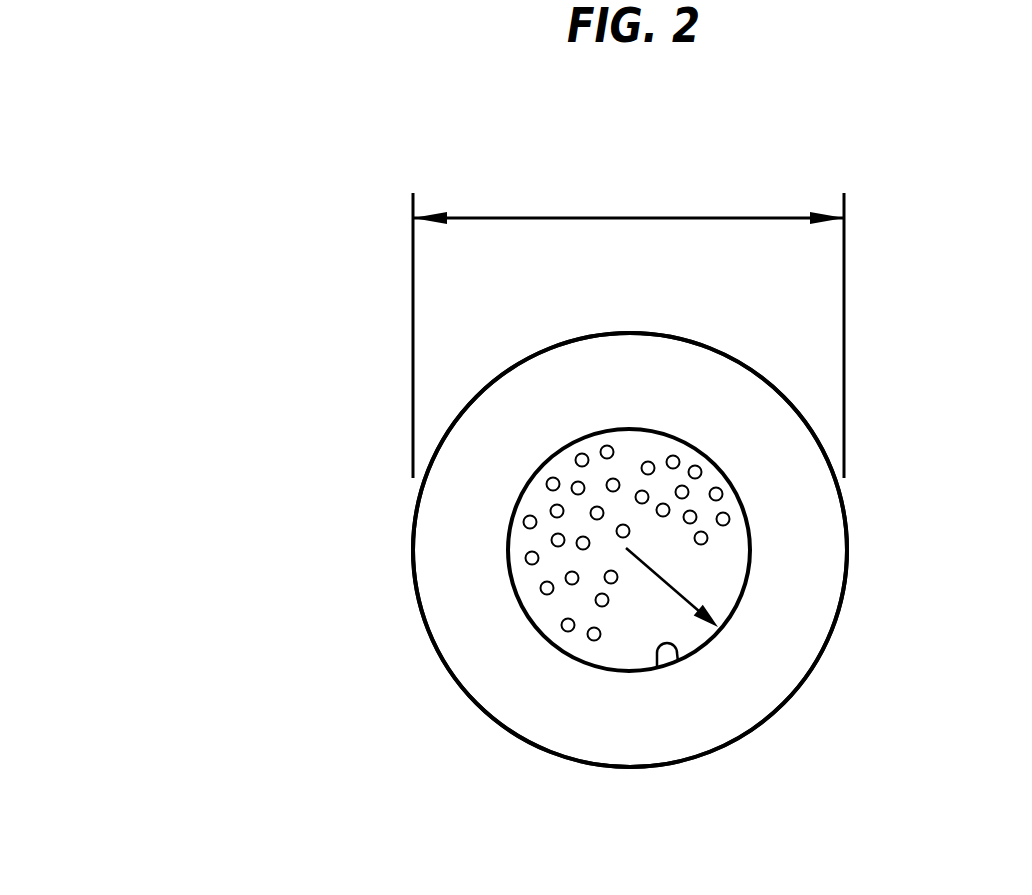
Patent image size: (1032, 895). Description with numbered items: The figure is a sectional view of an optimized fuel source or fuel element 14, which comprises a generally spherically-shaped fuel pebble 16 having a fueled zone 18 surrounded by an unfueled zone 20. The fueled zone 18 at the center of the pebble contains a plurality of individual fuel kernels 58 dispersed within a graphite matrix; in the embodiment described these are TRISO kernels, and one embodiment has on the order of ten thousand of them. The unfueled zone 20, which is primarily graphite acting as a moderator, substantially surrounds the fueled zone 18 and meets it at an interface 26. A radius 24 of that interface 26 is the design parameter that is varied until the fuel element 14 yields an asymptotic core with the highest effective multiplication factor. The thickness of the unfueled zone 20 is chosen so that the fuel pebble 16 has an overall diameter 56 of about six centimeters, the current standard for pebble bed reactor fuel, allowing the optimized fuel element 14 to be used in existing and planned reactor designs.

The fuel element 14 is at (130, 187).
The fuel pebble 16 is at (398, 627).
The fueled zone 18 is at (749, 553).
The unfueled zone 20 is at (808, 672).
The radius 24 is at (678, 588).
The interface 26 is at (678, 662).
The overall diameter 56 is at (563, 217).
The fuel kernels 58 is at (551, 541).